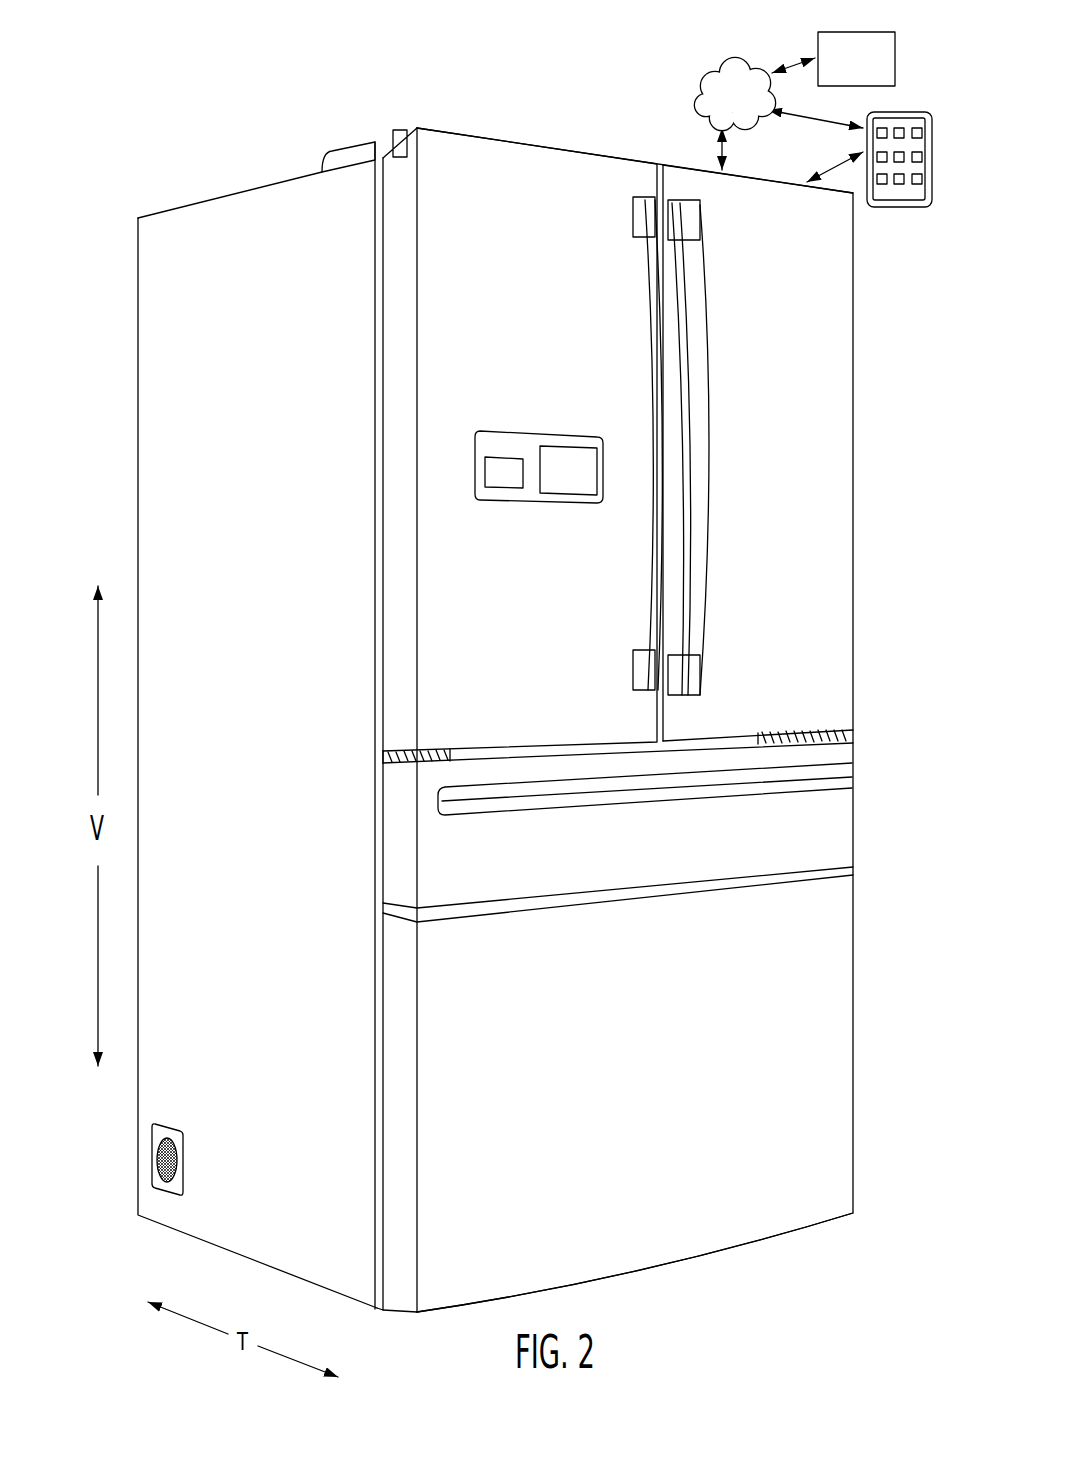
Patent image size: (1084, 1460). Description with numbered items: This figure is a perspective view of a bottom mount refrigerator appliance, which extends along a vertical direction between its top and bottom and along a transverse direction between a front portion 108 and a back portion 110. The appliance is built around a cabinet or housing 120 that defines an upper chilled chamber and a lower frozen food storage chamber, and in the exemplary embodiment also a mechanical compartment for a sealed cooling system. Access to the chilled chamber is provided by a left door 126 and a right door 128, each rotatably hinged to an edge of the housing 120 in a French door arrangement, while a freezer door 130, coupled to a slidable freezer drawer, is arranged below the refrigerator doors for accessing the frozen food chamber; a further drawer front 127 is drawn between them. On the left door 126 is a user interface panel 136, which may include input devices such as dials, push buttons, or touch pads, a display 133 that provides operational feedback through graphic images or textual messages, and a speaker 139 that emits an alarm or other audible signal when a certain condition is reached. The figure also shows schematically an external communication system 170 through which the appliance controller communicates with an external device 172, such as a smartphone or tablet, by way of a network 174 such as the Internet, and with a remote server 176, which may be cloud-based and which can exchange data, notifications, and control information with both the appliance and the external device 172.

The front portion 108 is at (680, 1266).
The back portion 110 is at (141, 1108).
The cabinet or housing 120 is at (202, 311).
The left door 126 is at (467, 157).
The freezer drawer 127 is at (840, 828).
The right door 128 is at (840, 297).
The freezer door 130 is at (840, 1000).
The display 133 is at (573, 460).
The user interface panel 136 is at (523, 442).
The speaker 139 is at (502, 482).
The external communication system 170 is at (741, 45).
The external device 172 is at (903, 207).
The network 174 is at (753, 111).
The remote server 176 is at (872, 71).